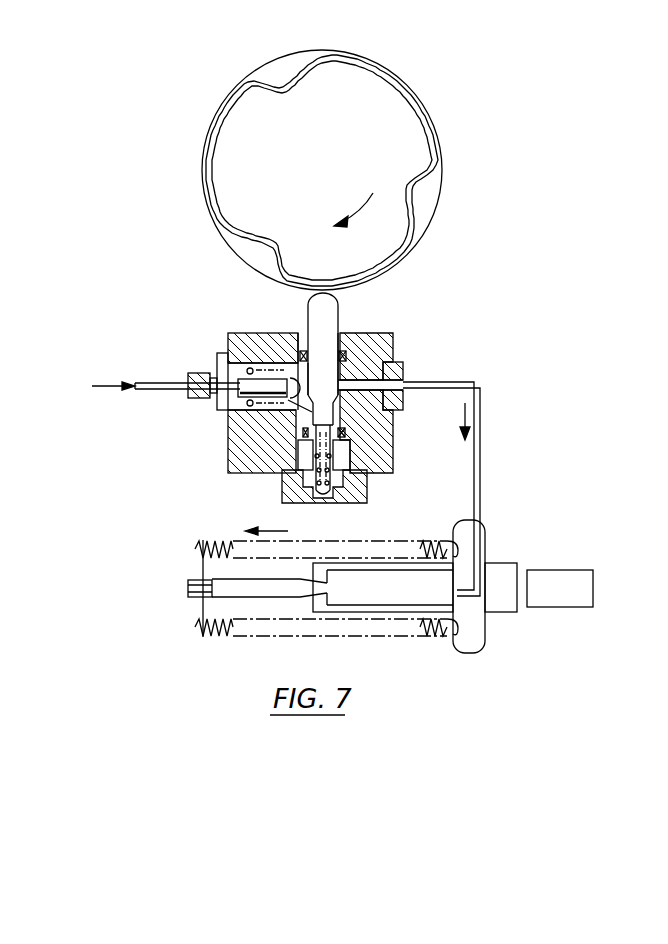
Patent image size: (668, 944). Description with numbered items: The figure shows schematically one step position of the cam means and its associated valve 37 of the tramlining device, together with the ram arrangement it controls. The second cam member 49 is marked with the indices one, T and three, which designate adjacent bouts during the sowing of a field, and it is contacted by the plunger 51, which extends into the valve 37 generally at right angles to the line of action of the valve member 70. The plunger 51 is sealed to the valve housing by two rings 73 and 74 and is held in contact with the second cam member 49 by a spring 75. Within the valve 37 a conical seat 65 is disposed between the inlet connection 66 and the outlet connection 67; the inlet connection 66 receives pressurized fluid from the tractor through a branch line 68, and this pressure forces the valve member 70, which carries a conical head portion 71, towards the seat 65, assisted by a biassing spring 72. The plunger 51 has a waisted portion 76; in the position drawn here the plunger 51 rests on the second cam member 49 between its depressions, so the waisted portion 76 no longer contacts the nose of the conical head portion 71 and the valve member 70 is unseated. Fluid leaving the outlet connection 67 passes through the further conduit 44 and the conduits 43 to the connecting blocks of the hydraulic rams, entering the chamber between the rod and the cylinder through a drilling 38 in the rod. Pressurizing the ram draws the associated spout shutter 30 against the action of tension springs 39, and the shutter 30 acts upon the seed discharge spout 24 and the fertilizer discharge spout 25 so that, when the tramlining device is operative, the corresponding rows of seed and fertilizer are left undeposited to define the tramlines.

The second cam member 49 is at (223, 152).
The plunger 51 is at (330, 320).
The ring 73 is at (347, 356).
The valve member 70 is at (228, 338).
The outlet connection 67 is at (405, 375).
The biassing spring 72 is at (245, 410).
The valve 37 is at (248, 462).
The inlet connection 66 is at (200, 374).
The branch line 68 is at (145, 390).
The conical head portion 71 is at (286, 389).
The conical seat 65 is at (296, 376).
The conduit 43 is at (494, 489).
The further conduit 44 is at (480, 435).
The waisted portion 76 is at (322, 410).
The ring 74 is at (395, 446).
The spring 75 is at (365, 485).
The tension springs 39 is at (250, 620).
The drilling 38 is at (351, 586).
The spout shutter 30 is at (500, 566).
The seed discharge spout 24 is at (573, 567).
The fertilizer discharge spout 25 is at (553, 572).